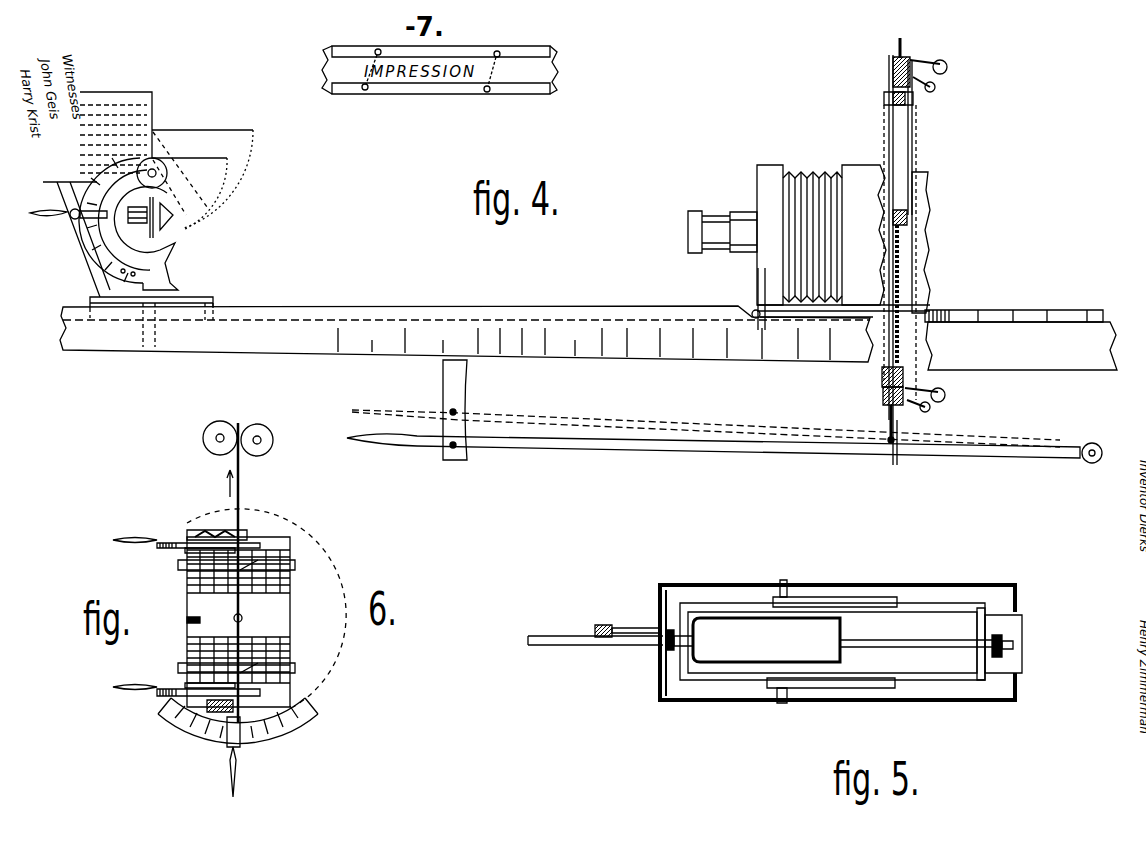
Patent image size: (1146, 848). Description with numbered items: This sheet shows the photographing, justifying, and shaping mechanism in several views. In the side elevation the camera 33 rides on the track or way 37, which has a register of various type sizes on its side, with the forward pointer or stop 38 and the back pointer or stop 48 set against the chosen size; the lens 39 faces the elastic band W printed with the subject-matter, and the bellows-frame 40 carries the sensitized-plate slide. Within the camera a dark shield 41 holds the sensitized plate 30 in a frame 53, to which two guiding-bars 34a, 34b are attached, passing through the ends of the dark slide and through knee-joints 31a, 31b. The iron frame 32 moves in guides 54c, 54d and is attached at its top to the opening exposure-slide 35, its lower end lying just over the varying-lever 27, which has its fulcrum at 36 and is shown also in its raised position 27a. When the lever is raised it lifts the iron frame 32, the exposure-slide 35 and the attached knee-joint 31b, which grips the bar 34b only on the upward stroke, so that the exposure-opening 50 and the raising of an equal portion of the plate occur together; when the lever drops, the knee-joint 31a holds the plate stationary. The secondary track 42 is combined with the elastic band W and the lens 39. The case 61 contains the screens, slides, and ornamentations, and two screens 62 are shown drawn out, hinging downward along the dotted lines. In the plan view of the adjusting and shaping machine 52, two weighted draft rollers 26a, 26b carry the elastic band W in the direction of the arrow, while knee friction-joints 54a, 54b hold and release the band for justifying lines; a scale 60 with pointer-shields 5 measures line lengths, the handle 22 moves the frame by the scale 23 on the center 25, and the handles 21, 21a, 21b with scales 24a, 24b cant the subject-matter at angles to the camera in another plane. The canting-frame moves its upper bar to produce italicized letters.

In FIG. 4, the pointer-shields 5 is at (151, 231).
In FIG. 6, the pointer-shields 5 is at (236, 616).
In FIG. 4, the handle 21 is at (118, 245).
In FIG. 6, the handle 21a is at (171, 685).
In FIG. 6, the handle 21b is at (171, 534).
In FIG. 6, the handle 22 is at (244, 757).
In FIG. 6, the scale 23 is at (238, 721).
In FIG. 4, the scale 24a is at (136, 167).
In FIG. 6, the scale 24a is at (178, 686).
In FIG. 6, the scale 24b is at (178, 552).
In FIG. 4, the center 25 is at (151, 325).
In FIG. 6, the center 25 is at (228, 611).
In FIG. 6, the weighted draft roller 26a is at (220, 426).
In FIG. 6, the weighted draft roller 26b is at (265, 427).
In FIG. 4, the varying-lever 27 is at (713, 412).
In FIG. 5, the varying-lever 27 is at (627, 622).
In FIG. 4, the varying-lever 27a is at (566, 408).
In FIG. 4, the sensitized plate 30 is at (906, 286).
In FIG. 5, the sensitized plate 30 is at (766, 640).
In FIG. 4, the knee-joint 31a is at (932, 410).
In FIG. 5, the knee-joint 31a is at (665, 660).
In FIG. 4, the knee-joint 31b is at (938, 90).
In FIG. 5, the knee-joint 31b is at (1020, 650).
In FIG. 4, the iron frame 32 is at (903, 46).
In FIG. 5, the iron frame 32 is at (837, 644).
In FIG. 4, the camera 33 is at (843, 241).
In FIG. 5, the camera 33 is at (850, 684).
In FIG. 4, the guiding-bar 34a is at (905, 458).
In FIG. 5, the guiding-bar 34a is at (560, 643).
In FIG. 4, the guiding-bar 34b is at (912, 158).
In FIG. 5, the guiding-bar 34b is at (910, 645).
In FIG. 4, the opening exposure-slide 35 is at (893, 74).
In FIG. 5, the opening exposure-slide 35 is at (1025, 623).
In FIG. 4, the fulcrum 36 is at (1102, 448).
In FIG. 4, the track 37 is at (588, 338).
In FIG. 4, the forward pointer 38 is at (758, 300).
In FIG. 4, the lens 39 is at (690, 212).
In FIG. 4, the bellows-frame 40 is at (806, 172).
In FIG. 5, the bellows-frame 40 is at (720, 673).
In FIG. 4, the dark shield 41 is at (883, 99).
In FIG. 5, the dark shield 41 is at (970, 610).
In FIG. 4, the secondary track 42 is at (505, 322).
In FIG. 4, the back pointer 48 is at (930, 310).
In FIG. 4, the exposure-opening 50 is at (888, 240).
In FIG. 4, the adjusting and shaping machine 52 is at (128, 224).
In FIG. 6, the adjusting and shaping machine 52 is at (266, 608).
In FIG. 5, the frame 53 is at (713, 613).
In FIG. 6, the knee friction-joint 54a is at (205, 736).
In FIG. 6, the knee friction-joint 54b is at (215, 530).
In FIG. 5, the guide 54c is at (831, 698).
In FIG. 5, the guide 54d is at (835, 583).
In FIG. 6, the scale 60 is at (238, 616).
In FIG. 4, the case 61 is at (166, 132).
In FIG. 4, the screens 62 is at (216, 176).
In FIG. 6, the elastic band W is at (241, 573).